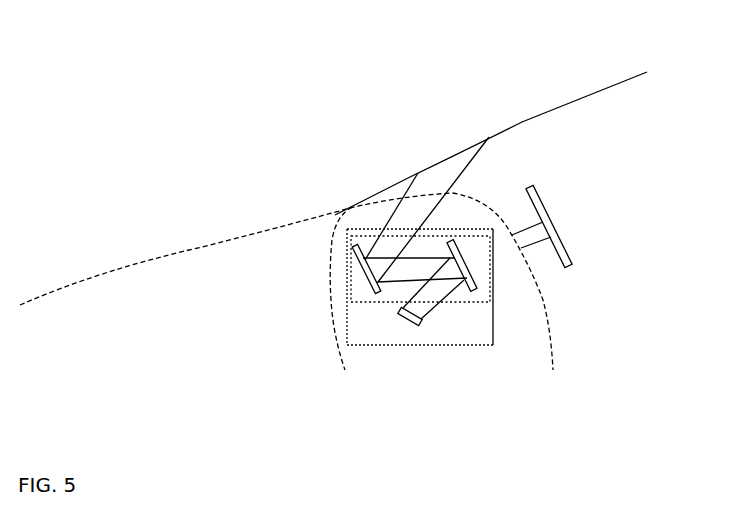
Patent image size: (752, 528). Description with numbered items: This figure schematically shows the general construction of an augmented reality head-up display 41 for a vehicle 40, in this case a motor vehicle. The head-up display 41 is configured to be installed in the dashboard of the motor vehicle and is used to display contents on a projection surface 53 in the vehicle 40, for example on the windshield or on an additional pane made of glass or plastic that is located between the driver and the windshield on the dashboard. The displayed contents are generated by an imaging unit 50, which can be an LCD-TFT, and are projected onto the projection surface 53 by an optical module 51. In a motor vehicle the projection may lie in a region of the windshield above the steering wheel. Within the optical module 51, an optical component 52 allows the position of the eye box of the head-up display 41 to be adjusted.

The vehicle 40 is at (202, 247).
The augmented reality head-up display 41 is at (347, 328).
The imaging unit 50 is at (412, 325).
The optical module 51 is at (473, 303).
The optical component 52 is at (355, 250).
The projection surface 53 is at (522, 122).